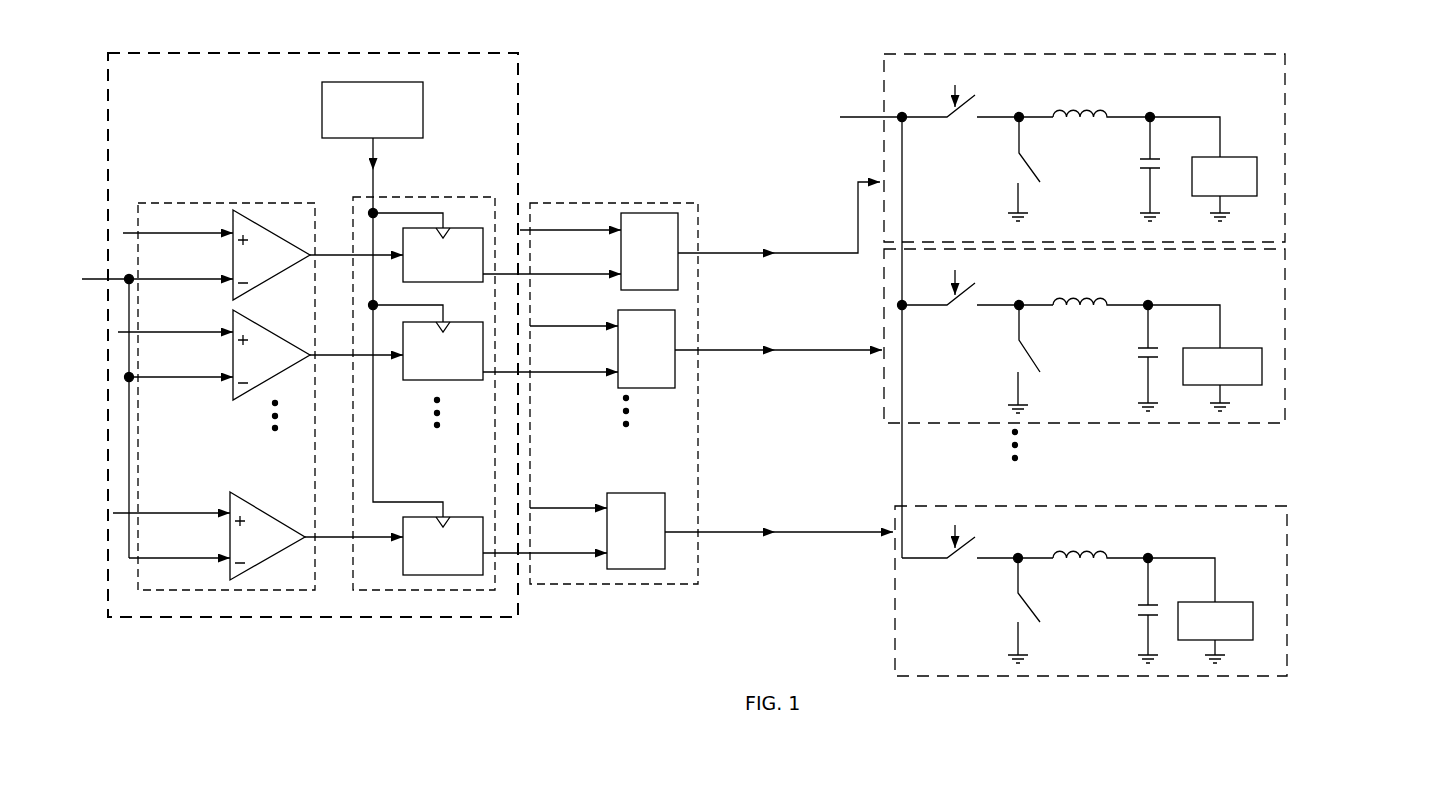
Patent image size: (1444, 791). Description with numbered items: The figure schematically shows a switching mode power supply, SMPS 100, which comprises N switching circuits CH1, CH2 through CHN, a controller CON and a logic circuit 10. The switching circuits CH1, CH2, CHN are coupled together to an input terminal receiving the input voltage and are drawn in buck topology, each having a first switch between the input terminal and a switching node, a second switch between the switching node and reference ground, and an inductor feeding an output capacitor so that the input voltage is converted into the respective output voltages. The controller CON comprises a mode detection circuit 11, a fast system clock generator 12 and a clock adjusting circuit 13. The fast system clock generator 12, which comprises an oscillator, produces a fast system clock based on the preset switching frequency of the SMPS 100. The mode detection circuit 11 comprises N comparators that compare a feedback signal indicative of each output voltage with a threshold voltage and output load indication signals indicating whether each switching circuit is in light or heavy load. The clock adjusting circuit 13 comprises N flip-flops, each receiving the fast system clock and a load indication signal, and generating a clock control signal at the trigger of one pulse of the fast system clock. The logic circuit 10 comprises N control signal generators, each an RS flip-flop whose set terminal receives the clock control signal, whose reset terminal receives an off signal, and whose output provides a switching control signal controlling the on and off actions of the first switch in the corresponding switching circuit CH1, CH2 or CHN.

The SMPS 100 is at (1400, 117).
The controller CON is at (515, 52).
The logic circuit 10 is at (699, 203).
The mode detection circuit 11 is at (273, 203).
The fast system clock generator 12 is at (424, 100).
The clock adjusting circuit 13 is at (495, 197).
The switching circuit CH1 is at (1285, 117).
The switching circuit CH2 is at (1292, 345).
The switching circuit CHN is at (1305, 545).